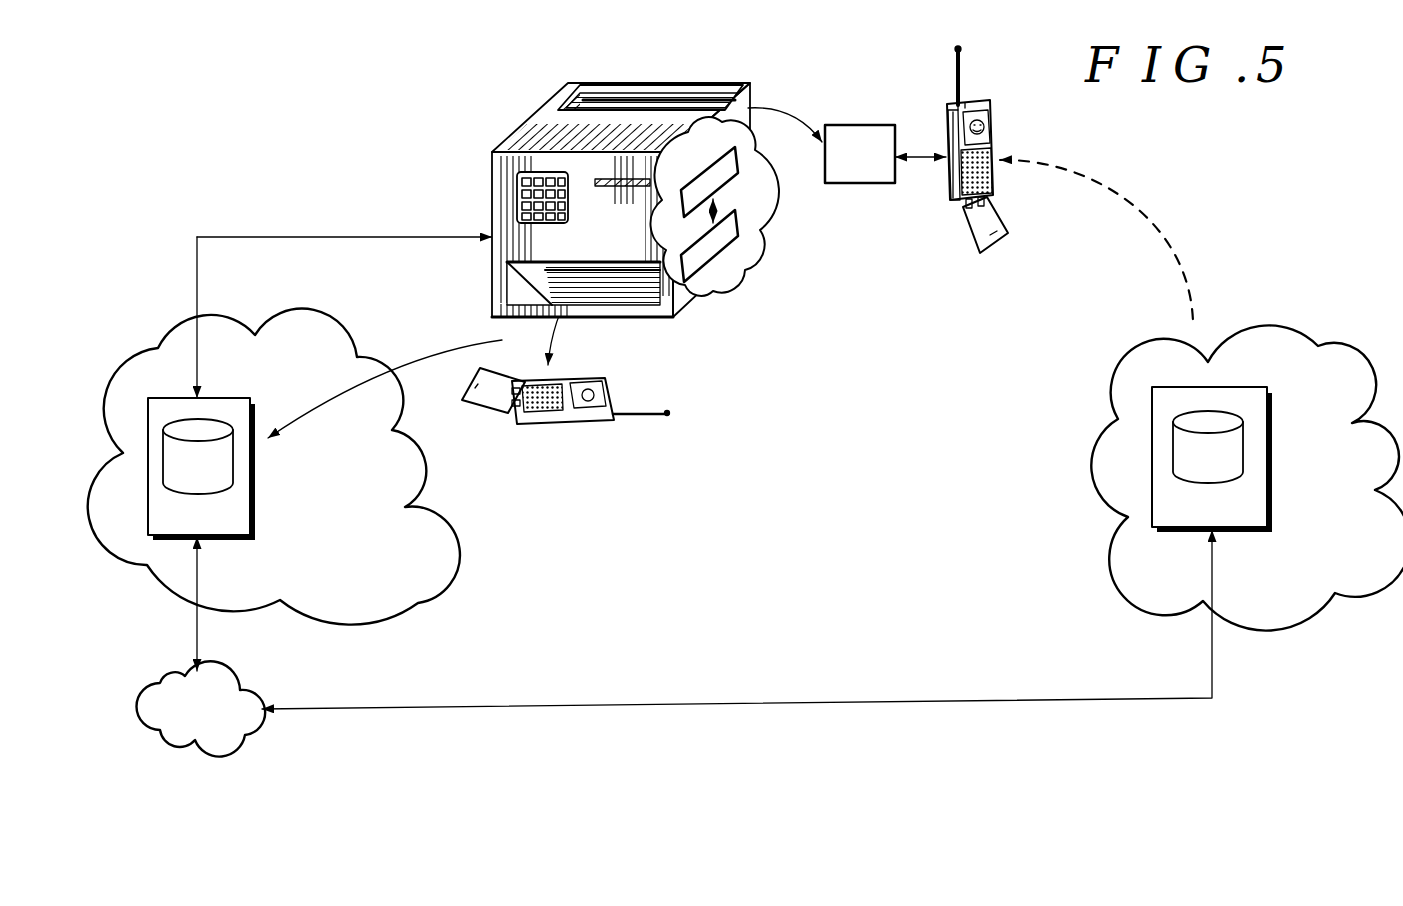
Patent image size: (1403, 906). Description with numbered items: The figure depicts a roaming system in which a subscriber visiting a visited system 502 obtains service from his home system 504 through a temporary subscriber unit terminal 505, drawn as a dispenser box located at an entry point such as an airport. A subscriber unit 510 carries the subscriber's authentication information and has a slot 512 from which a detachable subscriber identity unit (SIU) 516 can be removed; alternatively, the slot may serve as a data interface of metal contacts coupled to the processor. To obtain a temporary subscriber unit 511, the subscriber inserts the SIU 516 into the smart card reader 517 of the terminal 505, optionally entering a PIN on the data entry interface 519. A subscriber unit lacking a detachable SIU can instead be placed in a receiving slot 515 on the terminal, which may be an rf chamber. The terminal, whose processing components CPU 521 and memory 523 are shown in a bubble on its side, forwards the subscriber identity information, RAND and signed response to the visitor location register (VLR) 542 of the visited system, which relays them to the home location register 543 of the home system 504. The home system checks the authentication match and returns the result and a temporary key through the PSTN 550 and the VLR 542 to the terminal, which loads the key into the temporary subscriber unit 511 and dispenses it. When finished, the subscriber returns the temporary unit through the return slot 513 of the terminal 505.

The visited system 502 is at (312, 309).
The home system 504 is at (1268, 325).
The temporary subscriber unit terminal 505 is at (625, 78).
The subscriber unit 510 is at (957, 78).
The temporary subscriber unit 511 is at (590, 427).
The slot / data interface 512 is at (947, 182).
The return slot 513 is at (627, 305).
The receiving slot 515 is at (692, 87).
The subscriber identity unit (SIU) 516 is at (866, 125).
The smart card reader 517 is at (640, 174).
The data entry interface 519 is at (517, 188).
The CPU 521 is at (736, 168).
The memory 523 is at (725, 250).
The visitor location register (VLR) 542 is at (237, 405).
The home location register 543 is at (1211, 400).
The PSTN 550 is at (237, 746).